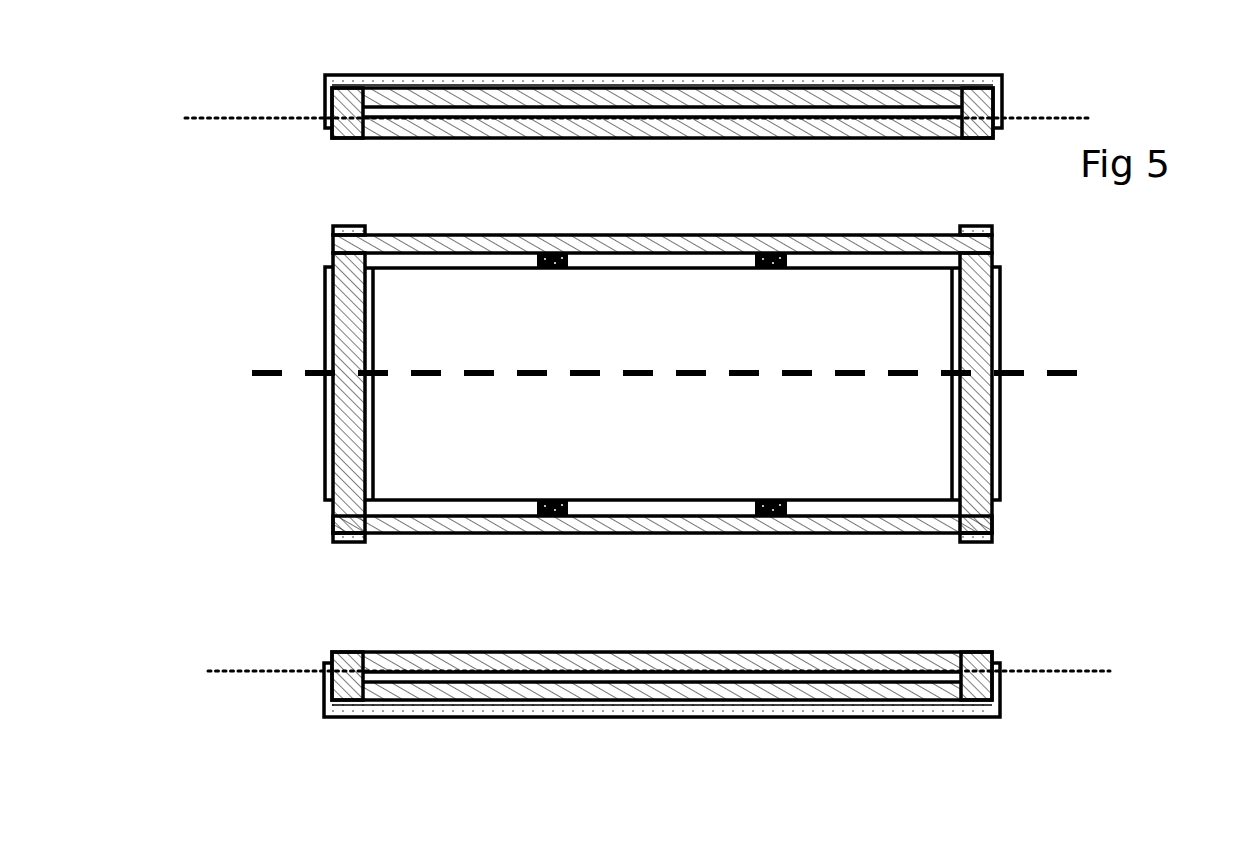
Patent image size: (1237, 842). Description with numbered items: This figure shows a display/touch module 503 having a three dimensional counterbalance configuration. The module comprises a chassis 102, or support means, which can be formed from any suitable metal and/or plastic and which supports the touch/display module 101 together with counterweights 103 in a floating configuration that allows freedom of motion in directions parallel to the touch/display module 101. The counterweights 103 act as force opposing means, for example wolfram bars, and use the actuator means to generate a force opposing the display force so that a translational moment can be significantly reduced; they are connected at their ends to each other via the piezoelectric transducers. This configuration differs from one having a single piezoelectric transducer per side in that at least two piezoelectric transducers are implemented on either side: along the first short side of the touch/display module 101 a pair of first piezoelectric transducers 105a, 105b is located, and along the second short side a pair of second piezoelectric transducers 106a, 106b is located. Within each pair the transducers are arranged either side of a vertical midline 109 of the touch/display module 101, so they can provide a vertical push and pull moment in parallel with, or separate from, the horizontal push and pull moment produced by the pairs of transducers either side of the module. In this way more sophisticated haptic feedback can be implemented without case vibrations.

The touch/display module 101 is at (478, 333).
The chassis 102 is at (323, 492).
The counterweight 103 is at (353, 453).
The first piezoelectric transducer 105a is at (595, 237).
The first piezoelectric transducer 105b is at (578, 97).
The second piezoelectric transducer 106a is at (747, 663).
The second piezoelectric transducer 106b is at (677, 688).
The vertical midline 109 is at (253, 668).
The display/touch module 503 is at (1043, 457).